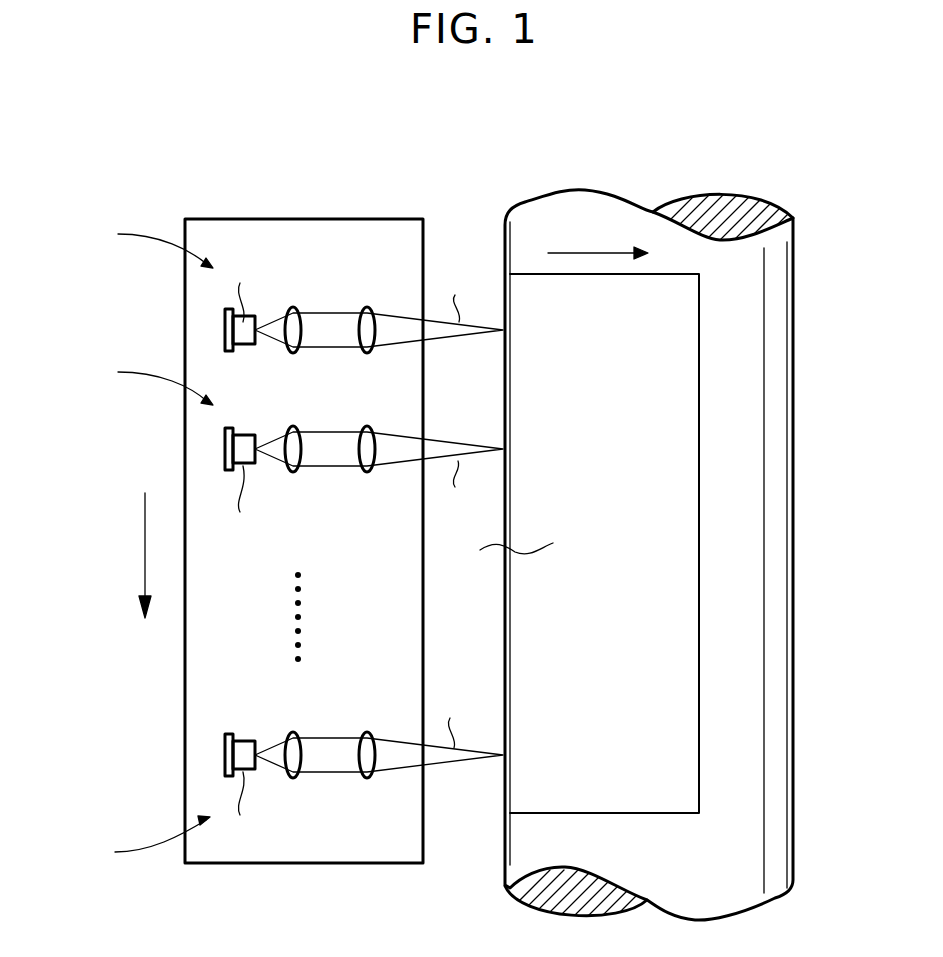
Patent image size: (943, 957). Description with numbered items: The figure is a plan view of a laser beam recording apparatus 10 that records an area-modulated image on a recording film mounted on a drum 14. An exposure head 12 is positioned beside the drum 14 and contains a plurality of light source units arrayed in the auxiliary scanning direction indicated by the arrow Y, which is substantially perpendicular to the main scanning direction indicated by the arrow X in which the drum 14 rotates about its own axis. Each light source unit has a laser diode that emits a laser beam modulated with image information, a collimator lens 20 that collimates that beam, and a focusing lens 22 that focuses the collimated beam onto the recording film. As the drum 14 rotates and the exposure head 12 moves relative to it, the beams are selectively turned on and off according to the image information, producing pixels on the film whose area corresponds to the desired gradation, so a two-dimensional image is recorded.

The laser beam recording apparatus 10 is at (452, 160).
The exposure head 12 is at (357, 219).
The drum 14 is at (742, 349).
The collimator lens 20 is at (295, 318).
The focusing lens 22 is at (367, 318).